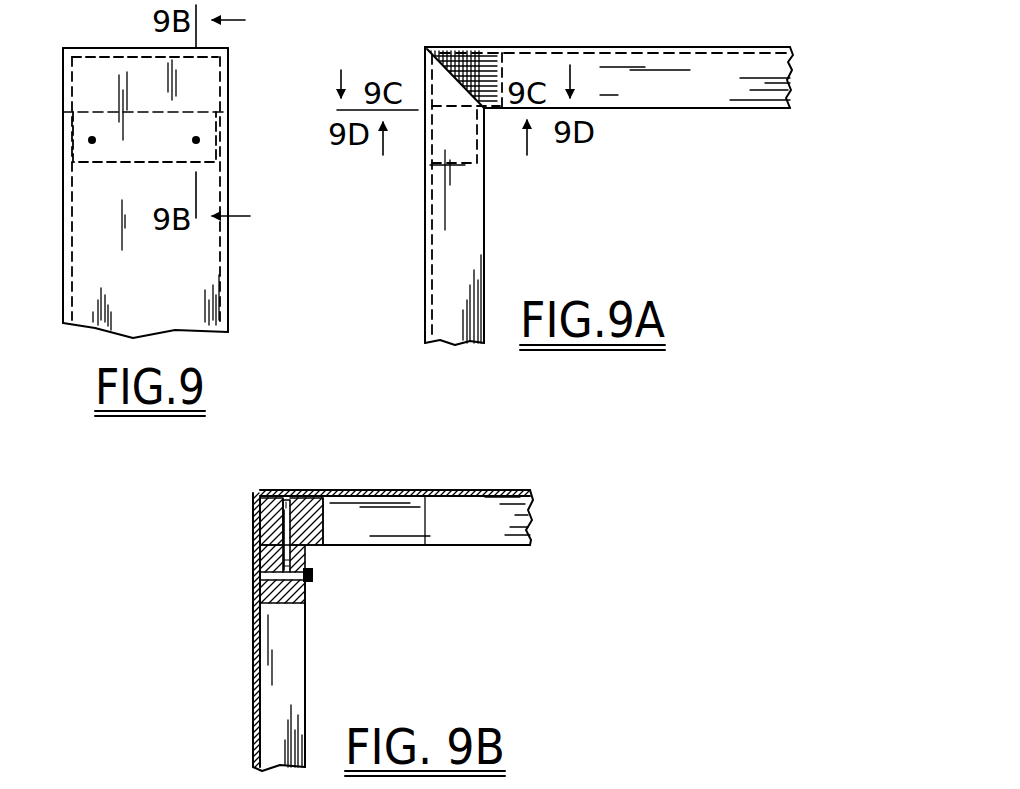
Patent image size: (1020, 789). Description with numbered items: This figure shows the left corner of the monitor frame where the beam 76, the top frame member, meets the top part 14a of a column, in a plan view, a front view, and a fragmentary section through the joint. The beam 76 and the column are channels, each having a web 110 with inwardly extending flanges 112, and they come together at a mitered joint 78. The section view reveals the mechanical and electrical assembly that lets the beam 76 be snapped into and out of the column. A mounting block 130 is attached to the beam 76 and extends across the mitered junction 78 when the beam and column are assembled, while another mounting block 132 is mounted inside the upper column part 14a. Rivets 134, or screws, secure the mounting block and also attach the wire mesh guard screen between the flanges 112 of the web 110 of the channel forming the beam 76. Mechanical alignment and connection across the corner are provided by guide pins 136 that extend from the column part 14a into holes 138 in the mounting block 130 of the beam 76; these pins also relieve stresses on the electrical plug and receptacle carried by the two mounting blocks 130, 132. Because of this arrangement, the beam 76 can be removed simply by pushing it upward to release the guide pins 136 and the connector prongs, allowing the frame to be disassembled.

In FIG. 9, the top part of column 14a is at (228, 277).
In FIG. 9A, the top part of column 14a is at (485, 257).
In FIG. 9B, the top part of column 14a is at (255, 661).
In FIG. 9, the beam 76 is at (228, 85).
In FIG. 9A, the beam 76 is at (612, 47).
In FIG. 9B, the beam 76 is at (430, 490).
In FIG. 9A, the mitered joint 78 is at (458, 48).
In FIG. 9B, the mitered joint 78 is at (310, 505).
In FIG. 9B, the web 110 is at (432, 500).
In FIG. 9B, the flange 112 is at (510, 548).
In FIG. 9B, the mounting block 130 is at (262, 510).
In FIG. 9B, the mounting block 132 is at (310, 584).
In FIG. 9B, the rivets 134 is at (262, 586).
In FIG. 9B, the guide pins 136 is at (262, 548).
In FIG. 9B, the holes 138 is at (284, 497).